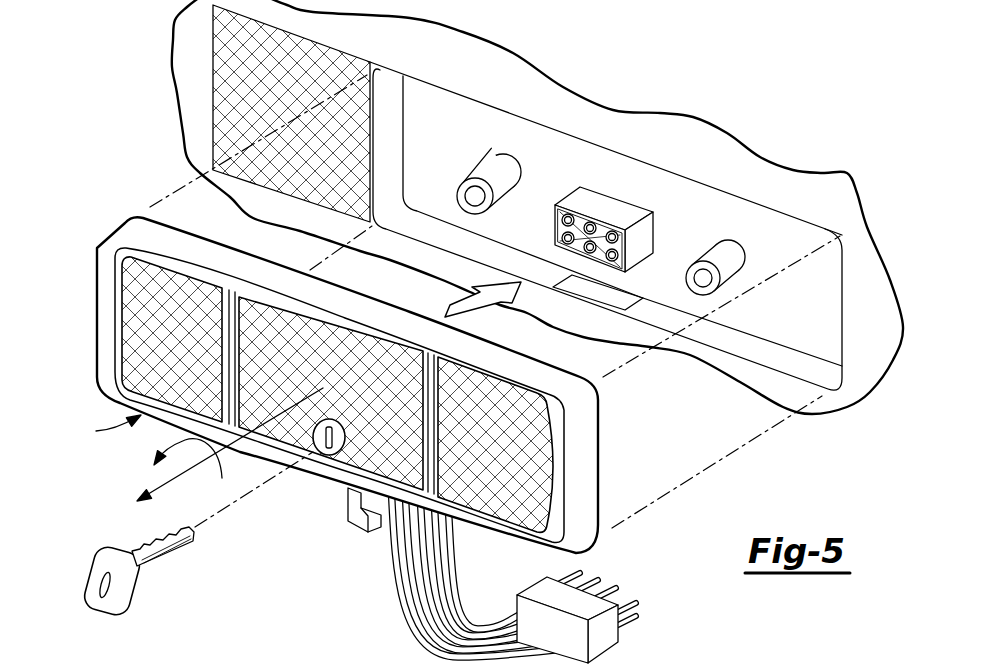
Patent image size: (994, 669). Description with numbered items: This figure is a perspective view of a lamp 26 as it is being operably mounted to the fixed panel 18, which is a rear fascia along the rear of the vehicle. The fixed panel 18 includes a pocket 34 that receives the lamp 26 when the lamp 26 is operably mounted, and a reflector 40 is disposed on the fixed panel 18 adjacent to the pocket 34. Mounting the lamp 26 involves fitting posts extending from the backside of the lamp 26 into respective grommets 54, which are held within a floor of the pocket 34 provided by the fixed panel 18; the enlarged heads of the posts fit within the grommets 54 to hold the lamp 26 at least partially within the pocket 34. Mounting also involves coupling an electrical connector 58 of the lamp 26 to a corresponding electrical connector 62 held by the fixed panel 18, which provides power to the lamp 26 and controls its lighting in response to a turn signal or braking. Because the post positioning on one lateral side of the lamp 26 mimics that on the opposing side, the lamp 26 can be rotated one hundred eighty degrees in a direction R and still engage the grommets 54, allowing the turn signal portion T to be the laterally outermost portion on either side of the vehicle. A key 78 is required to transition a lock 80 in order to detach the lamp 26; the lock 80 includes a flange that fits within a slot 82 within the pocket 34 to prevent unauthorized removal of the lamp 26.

The fixed panel 18 is at (755, 183).
The lamp 26 is at (133, 290).
The pocket 34 is at (565, 178).
The reflector 40 is at (243, 94).
The grommet 54 is at (463, 190).
The electrical connector 58 is at (610, 630).
The electrical connector 62 is at (590, 207).
The key 78 is at (118, 588).
The lock 80 is at (352, 518).
The slot 82 is at (617, 302).
The turn signal portion T is at (108, 431).
The direction R is at (191, 470).